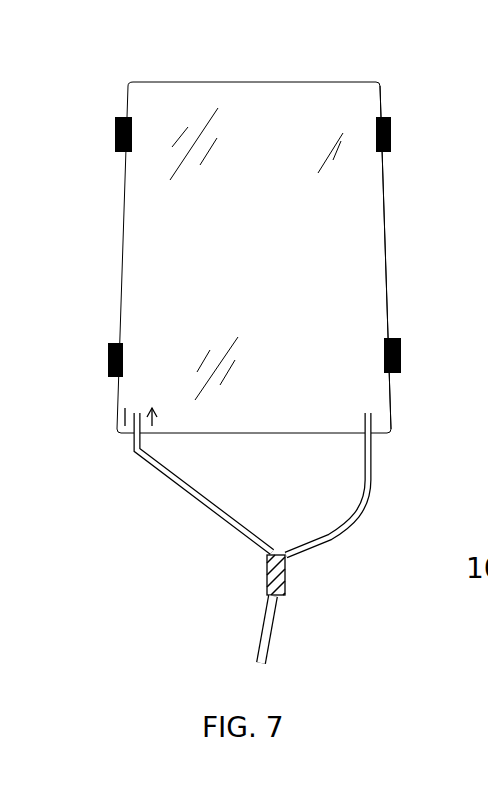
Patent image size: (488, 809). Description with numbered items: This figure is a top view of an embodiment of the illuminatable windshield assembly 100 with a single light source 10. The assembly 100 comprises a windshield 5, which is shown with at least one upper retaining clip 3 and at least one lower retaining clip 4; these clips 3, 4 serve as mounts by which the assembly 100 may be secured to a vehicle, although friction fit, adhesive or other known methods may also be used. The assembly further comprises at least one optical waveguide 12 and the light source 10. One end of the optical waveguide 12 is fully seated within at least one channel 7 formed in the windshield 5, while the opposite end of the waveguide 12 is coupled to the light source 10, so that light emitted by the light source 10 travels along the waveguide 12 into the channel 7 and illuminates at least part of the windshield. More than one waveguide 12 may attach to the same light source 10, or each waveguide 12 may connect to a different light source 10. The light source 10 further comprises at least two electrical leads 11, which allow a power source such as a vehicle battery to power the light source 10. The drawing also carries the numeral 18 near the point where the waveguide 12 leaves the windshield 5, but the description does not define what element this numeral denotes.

The windshield assembly 100 is at (274, 53).
The upper retaining clips 3 is at (370, 111).
The lower retaining clips 4 is at (360, 326).
The windshield 5 is at (393, 198).
The channel 7 is at (367, 407).
The ports 18 is at (140, 422).
The optical waveguide 12 is at (338, 521).
The light source 10 is at (292, 577).
The electrical leads 11 is at (281, 646).